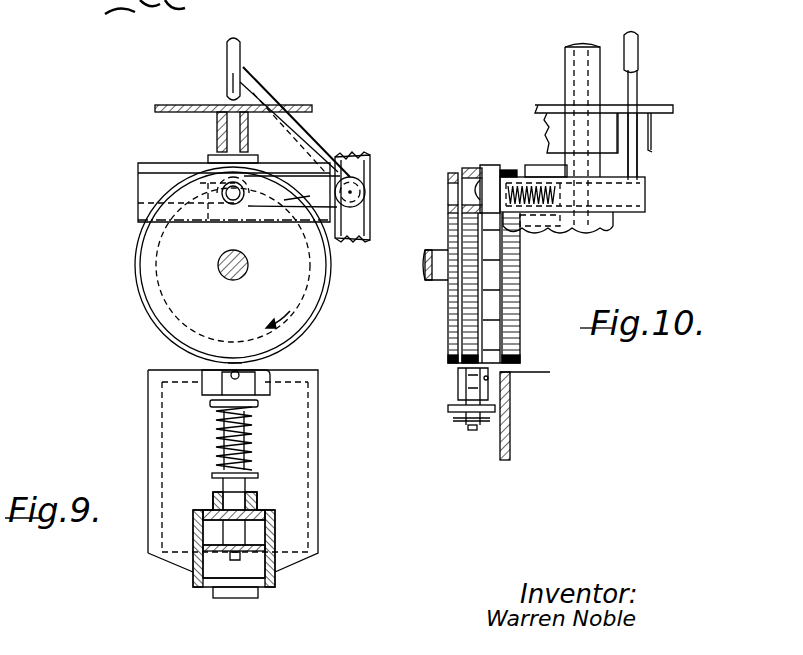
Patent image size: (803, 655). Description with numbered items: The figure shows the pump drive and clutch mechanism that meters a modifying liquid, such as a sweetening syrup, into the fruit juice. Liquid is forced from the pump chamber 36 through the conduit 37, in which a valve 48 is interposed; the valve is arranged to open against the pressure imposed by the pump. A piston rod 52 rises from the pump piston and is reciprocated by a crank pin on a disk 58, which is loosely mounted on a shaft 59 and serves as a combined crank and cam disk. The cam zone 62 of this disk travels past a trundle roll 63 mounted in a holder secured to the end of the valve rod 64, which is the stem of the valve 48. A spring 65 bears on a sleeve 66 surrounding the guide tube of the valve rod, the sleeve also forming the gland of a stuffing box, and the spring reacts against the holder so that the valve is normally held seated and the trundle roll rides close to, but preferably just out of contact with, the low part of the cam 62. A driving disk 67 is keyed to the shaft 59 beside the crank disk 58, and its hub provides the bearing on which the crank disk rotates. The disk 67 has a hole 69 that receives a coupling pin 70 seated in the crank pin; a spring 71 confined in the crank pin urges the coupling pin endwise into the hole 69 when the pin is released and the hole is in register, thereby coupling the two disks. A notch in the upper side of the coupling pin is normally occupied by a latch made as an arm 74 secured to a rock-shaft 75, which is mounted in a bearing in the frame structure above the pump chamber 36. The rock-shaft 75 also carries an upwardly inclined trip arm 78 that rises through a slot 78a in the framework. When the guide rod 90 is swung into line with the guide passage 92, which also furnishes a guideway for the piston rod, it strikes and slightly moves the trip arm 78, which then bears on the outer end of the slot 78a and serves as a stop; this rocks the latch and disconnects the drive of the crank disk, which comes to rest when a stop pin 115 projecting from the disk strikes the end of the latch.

In FIG. 9, the pump chamber 36 is at (318, 535).
In FIG. 10, the pump chamber 36 is at (510, 432).
In FIG. 9, the conduit 37 is at (255, 527).
In FIG. 9, the valve 48 is at (240, 556).
In FIG. 10, the piston rod 52 is at (565, 62).
In FIG. 9, the disk 58 is at (310, 322).
In FIG. 10, the disk 58 is at (495, 306).
In FIG. 9, the shaft 59 is at (250, 268).
In FIG. 10, the shaft 59 is at (430, 278).
In FIG. 9, the cam zone 62 is at (348, 212).
In FIG. 10, the cam zone 62 is at (460, 368).
In FIG. 9, the trundle roll 63 is at (263, 381).
In FIG. 10, the trundle roll 63 is at (470, 380).
In FIG. 9, the valve rod 64 is at (243, 417).
In FIG. 10, the valve rod 64 is at (470, 430).
In FIG. 9, the spring 65 is at (253, 460).
In FIG. 10, the spring 65 is at (462, 418).
In FIG. 9, the sleeve 66 is at (258, 476).
In FIG. 9, the disk 67 is at (310, 290).
In FIG. 10, the disk 67 is at (447, 335).
In FIG. 9, the hole or recess 69 is at (226, 199).
In FIG. 10, the hole or recess 69 is at (450, 195).
In FIG. 9, the coupling pin 70 is at (240, 203).
In FIG. 10, the coupling pin 70 is at (455, 168).
In FIG. 10, the spring 71 is at (553, 232).
In FIG. 9, the arm 74 is at (310, 183).
In FIG. 10, the arm 74 is at (490, 170).
In FIG. 9, the rock-shaft 75 is at (358, 190).
In FIG. 10, the rock-shaft 75 is at (640, 193).
In FIG. 9, the arm 78 is at (253, 88).
In FIG. 10, the arm 78 is at (637, 165).
In FIG. 9, the slot 78a is at (290, 103).
In FIG. 9, the guide rod 90 is at (243, 53).
In FIG. 10, the guide rod 90 is at (640, 50).
In FIG. 9, the guide passage 92 is at (233, 117).
In FIG. 9, the stop pin 115 is at (138, 202).